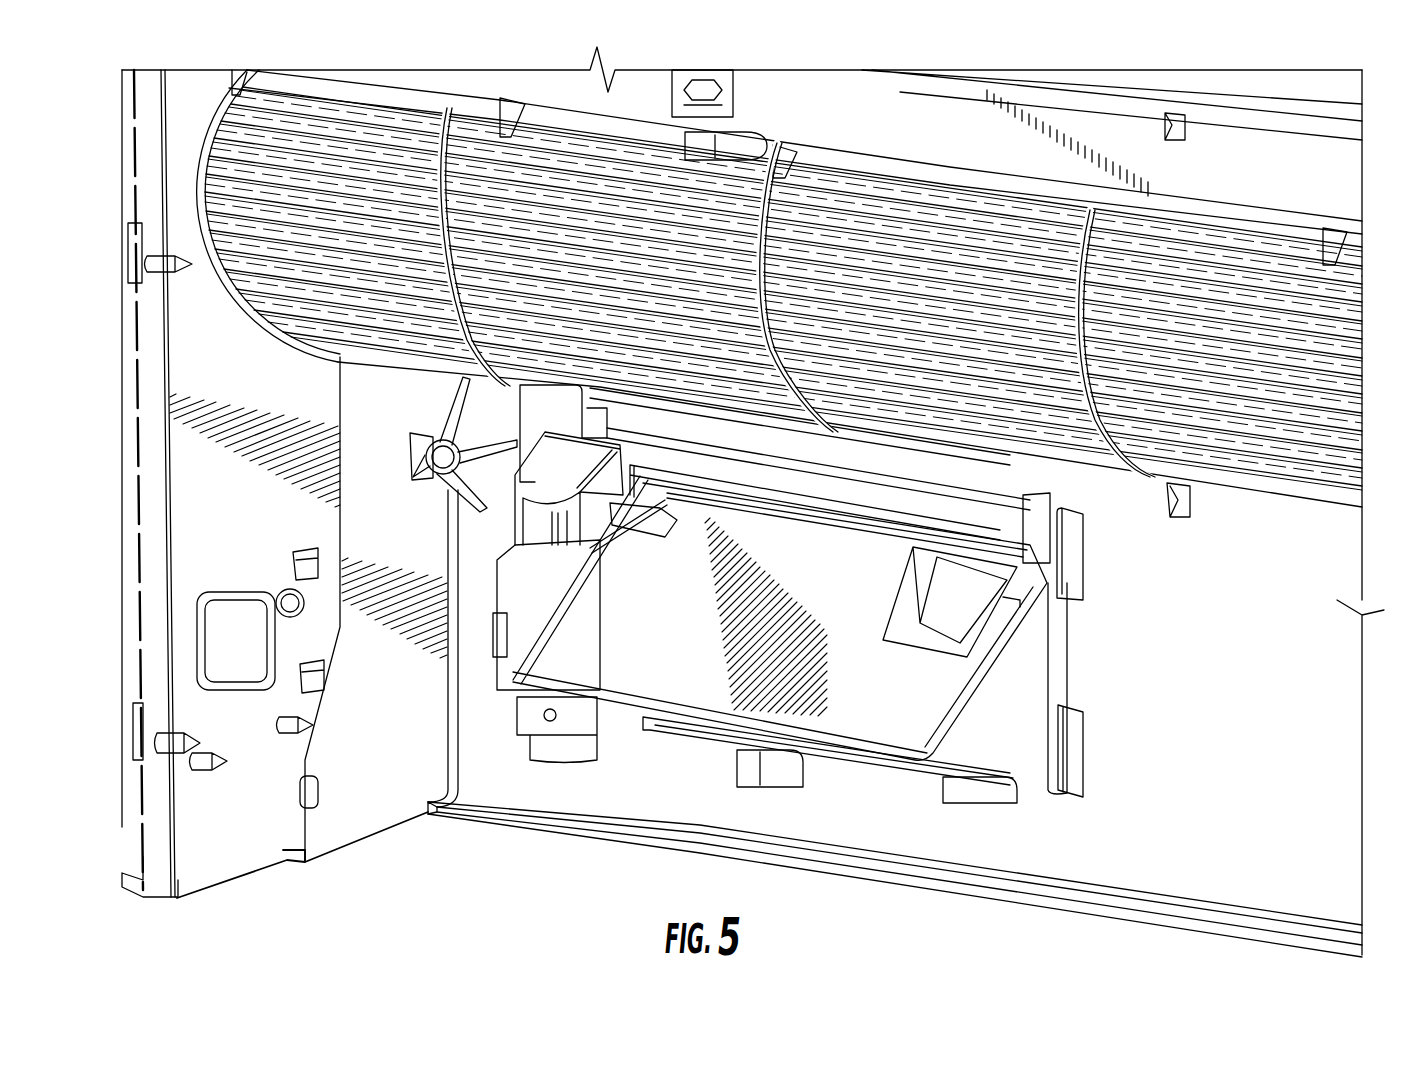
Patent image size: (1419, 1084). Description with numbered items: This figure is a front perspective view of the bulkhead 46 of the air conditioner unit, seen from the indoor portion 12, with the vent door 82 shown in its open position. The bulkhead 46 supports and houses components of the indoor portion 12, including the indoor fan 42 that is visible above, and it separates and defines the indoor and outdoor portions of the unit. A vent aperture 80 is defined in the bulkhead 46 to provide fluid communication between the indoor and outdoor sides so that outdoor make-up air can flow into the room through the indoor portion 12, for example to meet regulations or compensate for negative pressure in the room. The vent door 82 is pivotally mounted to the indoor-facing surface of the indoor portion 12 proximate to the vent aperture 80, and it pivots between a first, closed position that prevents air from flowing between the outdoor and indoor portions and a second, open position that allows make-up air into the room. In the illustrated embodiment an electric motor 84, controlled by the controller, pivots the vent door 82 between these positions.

The indoor portion 12 is at (482, 850).
The indoor fan 42 is at (1330, 352).
The bulkhead 46 is at (1323, 656).
The vent aperture 80 is at (982, 737).
The vent door 82 is at (927, 690).
The electric motor 84 is at (536, 605).